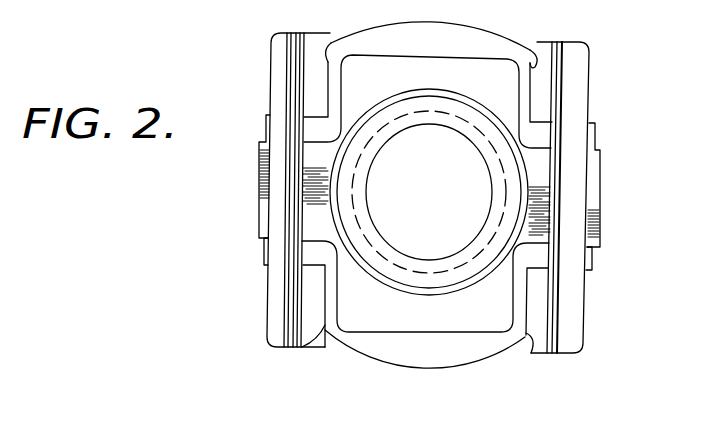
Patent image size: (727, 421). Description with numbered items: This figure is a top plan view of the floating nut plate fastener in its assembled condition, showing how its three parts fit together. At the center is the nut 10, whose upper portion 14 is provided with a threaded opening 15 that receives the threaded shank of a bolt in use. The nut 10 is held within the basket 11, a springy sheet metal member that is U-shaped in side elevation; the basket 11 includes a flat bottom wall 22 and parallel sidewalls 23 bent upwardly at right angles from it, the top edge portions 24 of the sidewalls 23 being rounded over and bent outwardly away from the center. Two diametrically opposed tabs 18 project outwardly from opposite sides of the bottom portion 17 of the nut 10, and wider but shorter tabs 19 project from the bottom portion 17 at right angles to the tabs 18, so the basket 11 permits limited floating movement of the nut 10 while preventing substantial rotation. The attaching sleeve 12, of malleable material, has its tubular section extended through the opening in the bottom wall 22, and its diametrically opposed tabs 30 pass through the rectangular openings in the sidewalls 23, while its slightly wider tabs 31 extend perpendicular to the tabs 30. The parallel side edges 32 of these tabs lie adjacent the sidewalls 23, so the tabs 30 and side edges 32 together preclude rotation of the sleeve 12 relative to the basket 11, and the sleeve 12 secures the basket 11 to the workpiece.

The nut 10 is at (442, 342).
The basket 11 is at (599, 80).
The attaching sleeve 12 is at (481, 366).
The upper portion 14 is at (467, 112).
The threaded opening 15 is at (472, 240).
The bottom portion 17 is at (529, 184).
The tabs 18 is at (258, 193).
The tabs 19 is at (442, 58).
The bottom wall 22 is at (548, 353).
The sidewalls 23 is at (308, 69).
The top edge portions 24 is at (269, 311).
The tabs 30 is at (264, 256).
The tabs 31 is at (417, 360).
The side edges 32 is at (328, 42).